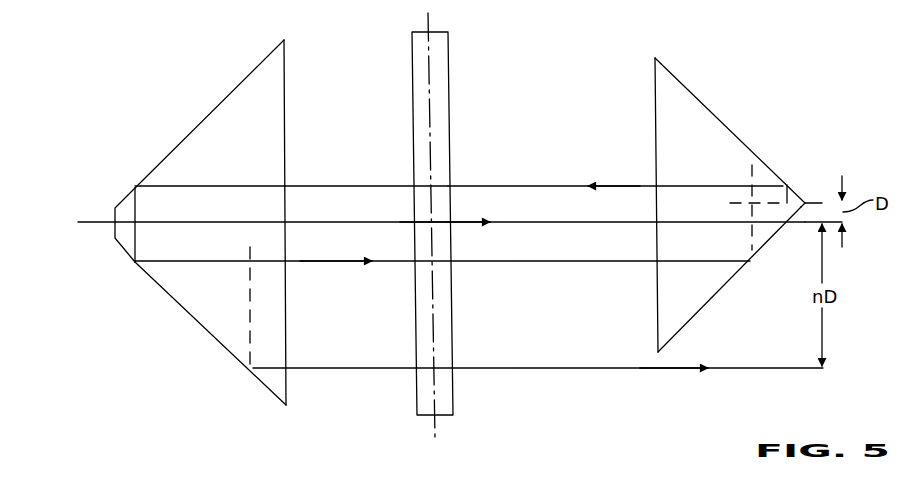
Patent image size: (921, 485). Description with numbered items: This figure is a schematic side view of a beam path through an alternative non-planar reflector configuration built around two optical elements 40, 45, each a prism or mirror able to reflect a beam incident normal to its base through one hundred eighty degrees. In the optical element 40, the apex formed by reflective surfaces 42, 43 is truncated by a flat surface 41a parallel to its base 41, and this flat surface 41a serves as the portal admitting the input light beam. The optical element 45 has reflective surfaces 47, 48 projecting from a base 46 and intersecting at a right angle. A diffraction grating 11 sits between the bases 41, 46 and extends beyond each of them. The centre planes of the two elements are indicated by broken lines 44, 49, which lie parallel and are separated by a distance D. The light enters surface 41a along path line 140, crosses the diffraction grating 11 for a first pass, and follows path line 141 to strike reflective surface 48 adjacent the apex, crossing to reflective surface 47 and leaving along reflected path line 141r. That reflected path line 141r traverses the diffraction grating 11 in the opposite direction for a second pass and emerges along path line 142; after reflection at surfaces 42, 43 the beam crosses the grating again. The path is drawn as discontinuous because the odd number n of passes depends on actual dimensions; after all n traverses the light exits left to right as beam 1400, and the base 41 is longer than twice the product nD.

The optical element 40 is at (164, 222).
The base 41 is at (285, 163).
The flat surface 41a is at (113, 240).
The reflective surface 42 is at (182, 137).
The reflective surface 43 is at (183, 308).
The optical element 45 is at (752, 195).
The base 46 is at (657, 177).
The reflective surface 47 is at (725, 118).
The reflective surface 48 is at (737, 280).
The broken line indicating centre plane 49 is at (812, 203).
The broken line indicating centre plane 44 is at (800, 224).
The diffraction grating 11 is at (453, 381).
The path line 140 is at (103, 221).
The path line 141 is at (545, 222).
The reflected path line 141r is at (490, 183).
The path line 142 is at (381, 186).
The output beam 1400 is at (780, 365).